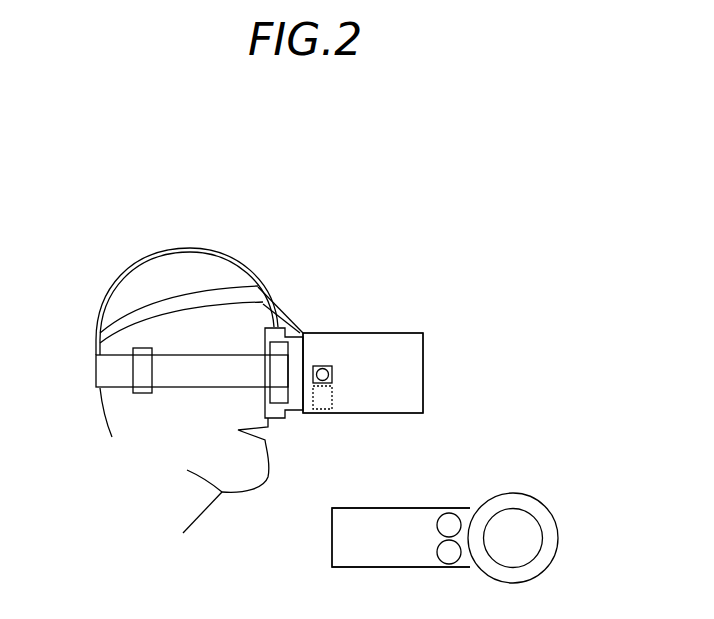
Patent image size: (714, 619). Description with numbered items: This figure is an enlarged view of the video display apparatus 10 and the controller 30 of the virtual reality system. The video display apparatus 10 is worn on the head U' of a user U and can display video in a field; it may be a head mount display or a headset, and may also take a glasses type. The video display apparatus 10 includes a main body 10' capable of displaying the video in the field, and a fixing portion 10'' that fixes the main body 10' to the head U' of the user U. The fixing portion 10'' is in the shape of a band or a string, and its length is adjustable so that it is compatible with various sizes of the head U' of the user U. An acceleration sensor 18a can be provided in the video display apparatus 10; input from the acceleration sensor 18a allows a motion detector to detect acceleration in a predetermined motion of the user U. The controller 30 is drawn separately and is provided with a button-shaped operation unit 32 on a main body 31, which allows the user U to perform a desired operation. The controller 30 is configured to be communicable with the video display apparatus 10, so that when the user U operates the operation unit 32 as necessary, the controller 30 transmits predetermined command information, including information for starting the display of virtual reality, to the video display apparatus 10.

The video display apparatus 10 is at (273, 342).
The main body 10' is at (363, 346).
The fixing portion 10'' is at (192, 391).
The acceleration sensor 18a is at (315, 410).
The controller 30 is at (514, 479).
The main body 31 is at (487, 498).
The operation unit 32 is at (437, 527).
The user U is at (152, 460).
The head U' is at (163, 301).